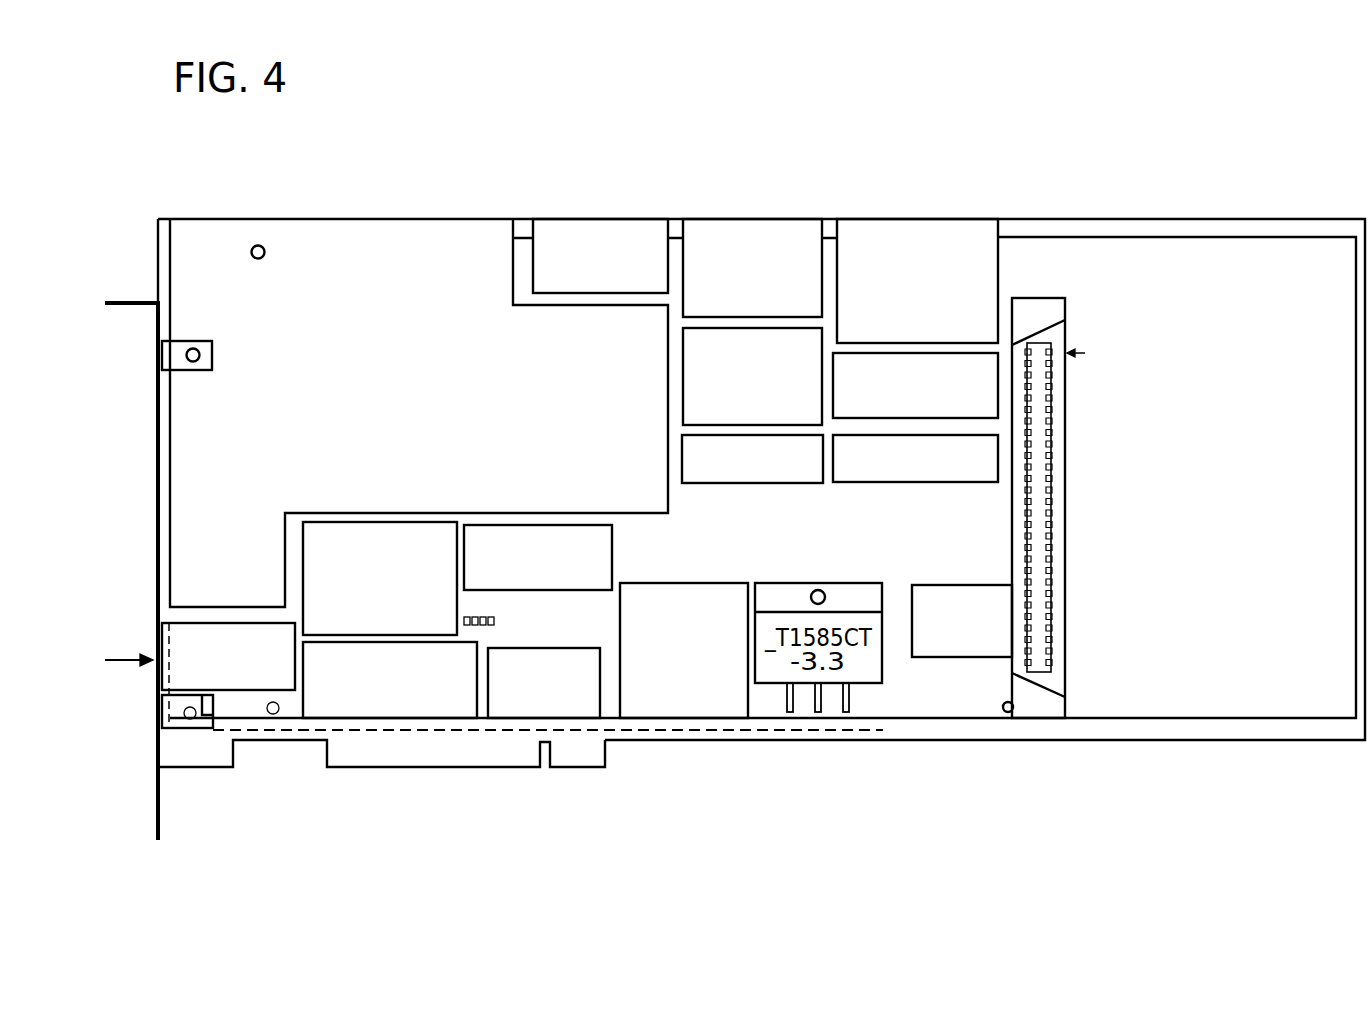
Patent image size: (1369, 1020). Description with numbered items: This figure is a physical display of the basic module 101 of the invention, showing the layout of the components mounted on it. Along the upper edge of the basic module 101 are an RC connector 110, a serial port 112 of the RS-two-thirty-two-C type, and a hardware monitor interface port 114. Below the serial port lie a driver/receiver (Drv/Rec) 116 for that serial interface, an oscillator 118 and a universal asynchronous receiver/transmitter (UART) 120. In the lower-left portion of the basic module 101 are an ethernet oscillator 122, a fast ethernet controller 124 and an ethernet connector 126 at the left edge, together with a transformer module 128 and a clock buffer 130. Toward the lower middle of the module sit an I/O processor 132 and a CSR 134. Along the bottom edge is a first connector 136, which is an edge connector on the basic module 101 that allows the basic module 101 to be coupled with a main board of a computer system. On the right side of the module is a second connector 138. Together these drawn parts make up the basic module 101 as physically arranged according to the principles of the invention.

The basic module 101 is at (345, 218).
The RC connector 110 is at (558, 218).
The RS-232C serial port 112 is at (720, 218).
The hardware monitor interface port 114 is at (910, 218).
The RS-232C Drv/Rec 116 is at (683, 385).
The oscillator 118 is at (900, 485).
The universal asynchronous receiver/transmitter (UART) 120 is at (740, 485).
The ethernet oscillator 122 is at (530, 523).
The fast ethernet controller 124 is at (375, 522).
The ethernet connector 126 is at (215, 622).
The transformer module 128 is at (348, 720).
The clock buffer 130 is at (515, 722).
The I/O processor 132 is at (676, 720).
The CSR 134 is at (935, 658).
The first connector 136 is at (415, 770).
The second connector 138 is at (1043, 322).